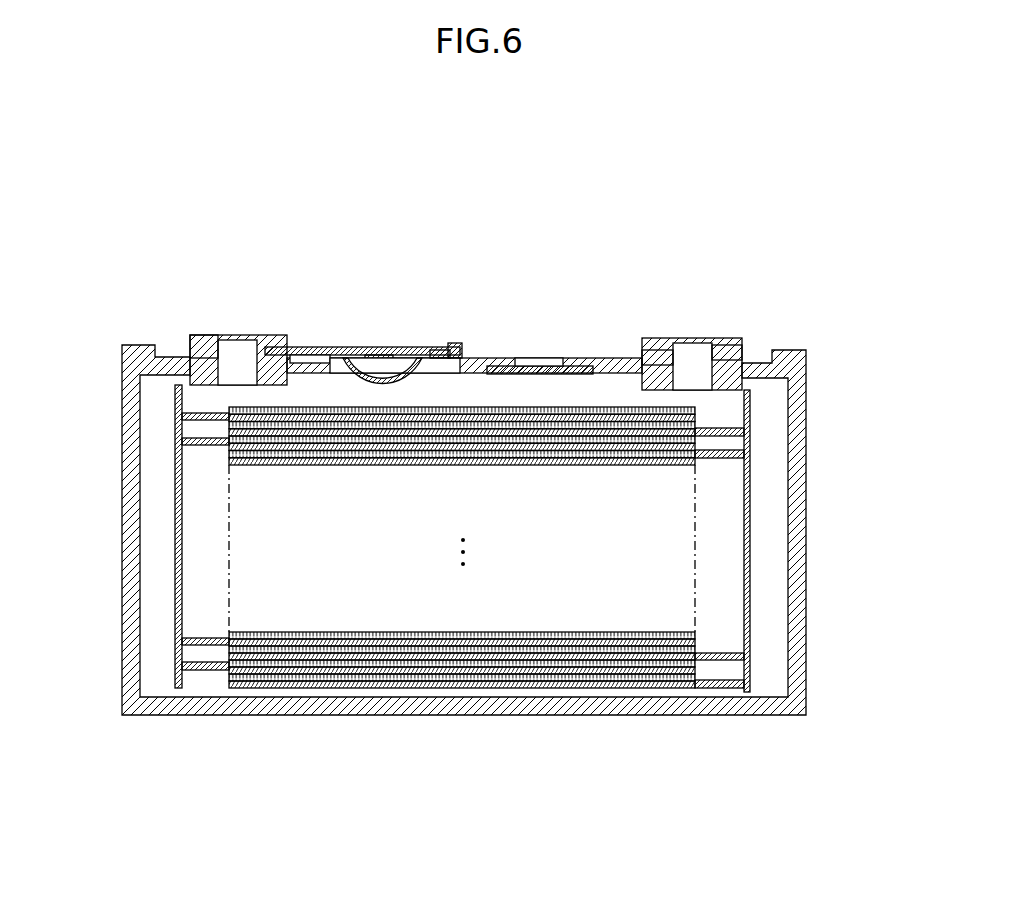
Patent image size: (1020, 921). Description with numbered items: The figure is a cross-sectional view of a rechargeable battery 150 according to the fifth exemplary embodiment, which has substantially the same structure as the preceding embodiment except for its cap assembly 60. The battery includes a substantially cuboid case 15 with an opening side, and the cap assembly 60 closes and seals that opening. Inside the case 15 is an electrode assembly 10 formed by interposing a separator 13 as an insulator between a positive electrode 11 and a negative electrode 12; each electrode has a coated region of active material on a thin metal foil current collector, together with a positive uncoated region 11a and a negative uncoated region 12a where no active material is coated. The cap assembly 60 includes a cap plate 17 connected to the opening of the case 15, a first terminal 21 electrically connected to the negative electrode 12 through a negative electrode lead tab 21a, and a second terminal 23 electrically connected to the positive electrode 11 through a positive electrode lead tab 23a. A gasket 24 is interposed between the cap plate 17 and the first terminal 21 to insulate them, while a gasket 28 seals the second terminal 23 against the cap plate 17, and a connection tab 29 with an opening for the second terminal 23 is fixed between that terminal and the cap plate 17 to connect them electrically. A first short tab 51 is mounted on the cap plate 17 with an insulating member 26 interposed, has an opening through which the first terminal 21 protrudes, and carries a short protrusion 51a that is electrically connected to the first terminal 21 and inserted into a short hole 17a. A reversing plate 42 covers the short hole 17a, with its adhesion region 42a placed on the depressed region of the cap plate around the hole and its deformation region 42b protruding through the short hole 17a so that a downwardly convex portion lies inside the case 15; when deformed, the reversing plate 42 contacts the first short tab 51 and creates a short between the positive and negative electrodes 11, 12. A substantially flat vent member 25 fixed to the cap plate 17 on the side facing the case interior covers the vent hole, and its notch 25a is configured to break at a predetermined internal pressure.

The rechargeable battery 150 is at (502, 176).
The case 15 is at (806, 462).
The cap plate 17 is at (788, 350).
The short hole 17a is at (393, 358).
The first terminal 21 is at (240, 336).
The negative electrode lead tab 21a is at (175, 541).
The second terminal 23 is at (706, 338).
The positive electrode lead tab 23a is at (750, 552).
The gasket 24 is at (180, 340).
The vent member 25 is at (580, 358).
The notch 25a is at (545, 366).
The insulating member 26 is at (450, 348).
The gasket 28 is at (735, 338).
The connection tab 29 is at (650, 338).
The reversing plate 42 is at (425, 356).
The adhesion region 42a is at (323, 355).
The deformation region 42b is at (470, 345).
The first short tab 51 is at (338, 347).
The short protrusion 51a is at (385, 355).
The cap assembly 60 is at (605, 348).
The electrode assembly 10 is at (610, 697).
The positive electrode 11 is at (453, 690).
The positive uncoated region 11a is at (730, 690).
The negative electrode 12 is at (325, 690).
The negative uncoated region 12a is at (218, 690).
The separator 13 is at (390, 690).